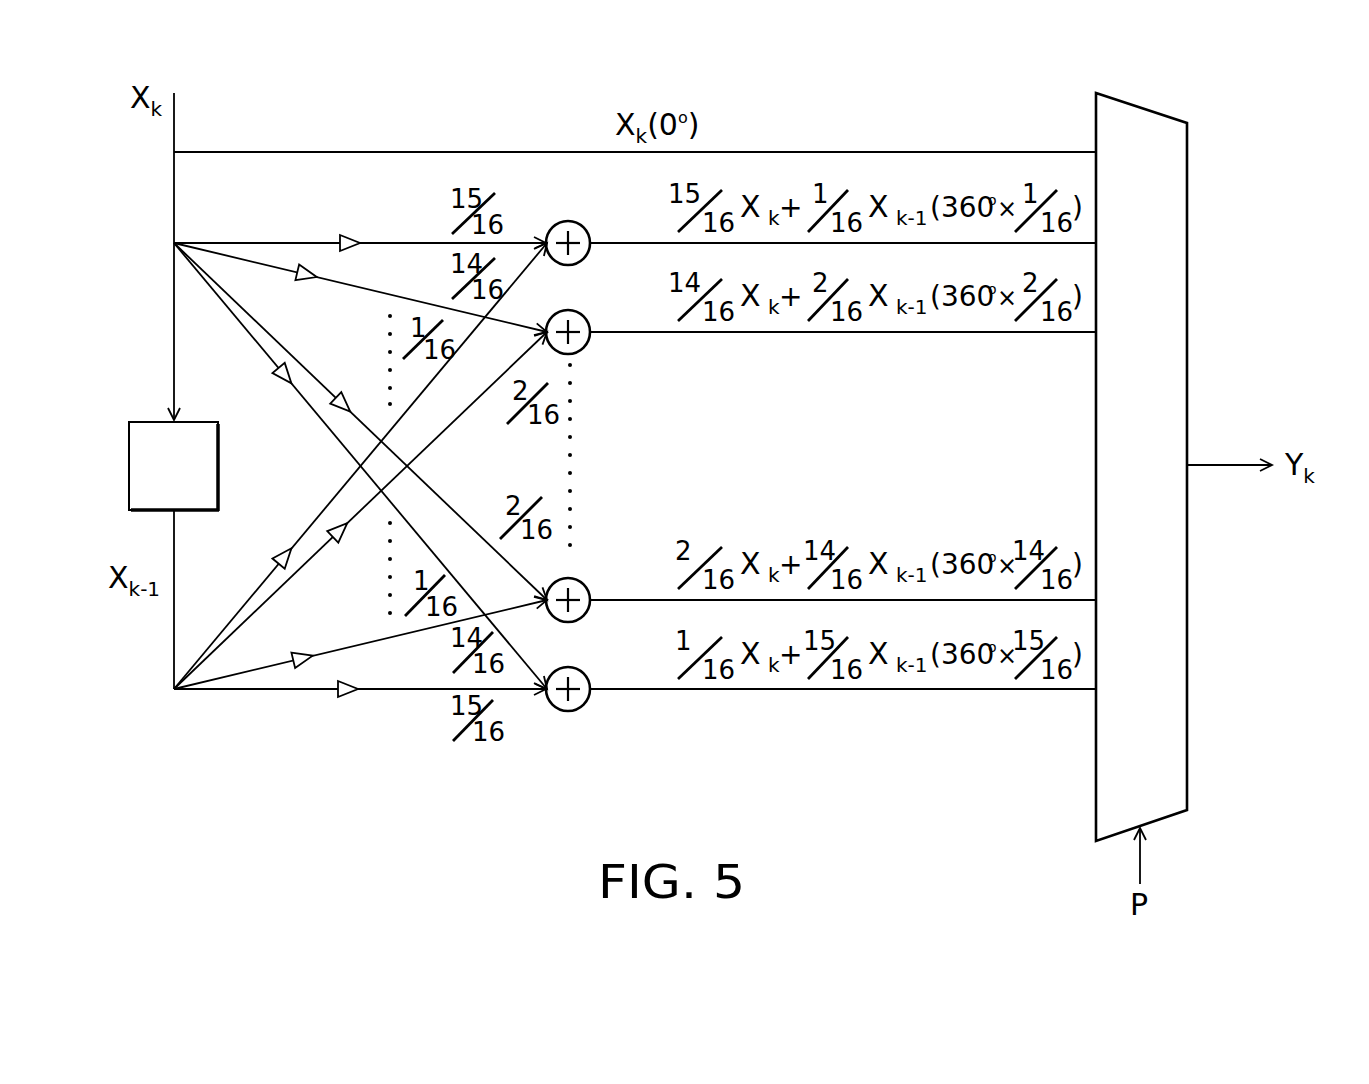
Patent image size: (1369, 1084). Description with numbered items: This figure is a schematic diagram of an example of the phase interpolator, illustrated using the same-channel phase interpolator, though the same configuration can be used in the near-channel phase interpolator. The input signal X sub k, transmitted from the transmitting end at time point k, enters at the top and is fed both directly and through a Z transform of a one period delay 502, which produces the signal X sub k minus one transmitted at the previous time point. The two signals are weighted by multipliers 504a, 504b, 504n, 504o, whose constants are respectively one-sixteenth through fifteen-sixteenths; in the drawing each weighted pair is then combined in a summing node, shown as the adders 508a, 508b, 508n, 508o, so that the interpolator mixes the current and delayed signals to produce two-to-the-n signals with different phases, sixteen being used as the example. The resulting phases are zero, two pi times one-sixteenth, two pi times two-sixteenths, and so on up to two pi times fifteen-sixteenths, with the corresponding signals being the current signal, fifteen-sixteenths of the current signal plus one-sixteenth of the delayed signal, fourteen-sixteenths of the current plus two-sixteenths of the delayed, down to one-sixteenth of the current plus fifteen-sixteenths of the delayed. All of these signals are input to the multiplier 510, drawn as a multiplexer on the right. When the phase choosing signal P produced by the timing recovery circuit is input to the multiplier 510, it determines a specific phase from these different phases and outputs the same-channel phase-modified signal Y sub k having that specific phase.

The Z transform of a one period delay 502 is at (143, 420).
The multiplier 504a is at (358, 233).
The multiplier 504b is at (305, 284).
The multiplier 504n is at (346, 394).
The multiplier 504o is at (277, 388).
The adder 508a is at (574, 221).
The adder 508b is at (574, 310).
The adder 508n is at (574, 578).
The adder 508o is at (574, 667).
The multiplier 510 is at (1140, 104).